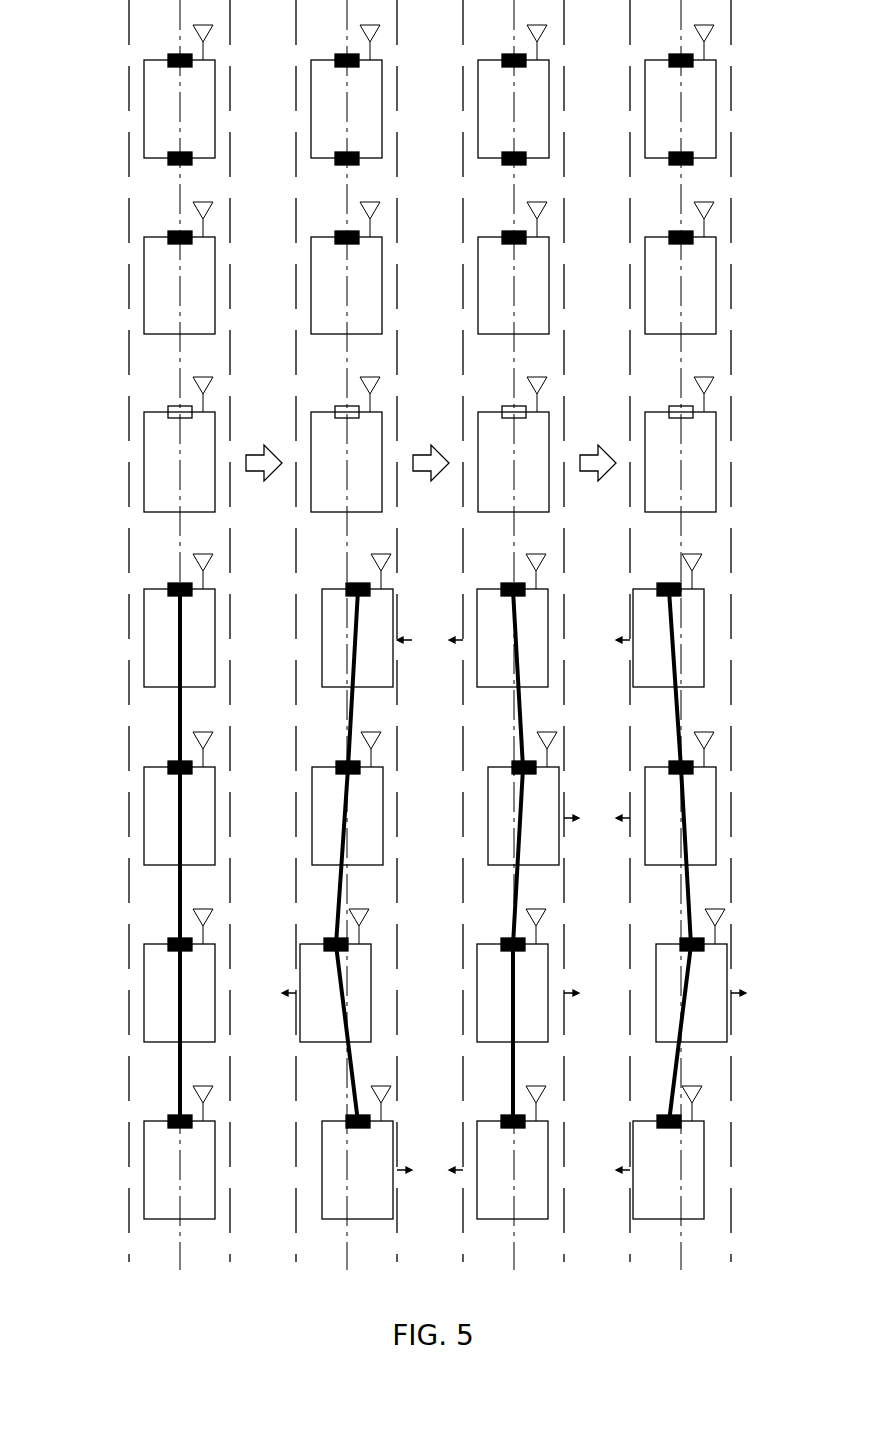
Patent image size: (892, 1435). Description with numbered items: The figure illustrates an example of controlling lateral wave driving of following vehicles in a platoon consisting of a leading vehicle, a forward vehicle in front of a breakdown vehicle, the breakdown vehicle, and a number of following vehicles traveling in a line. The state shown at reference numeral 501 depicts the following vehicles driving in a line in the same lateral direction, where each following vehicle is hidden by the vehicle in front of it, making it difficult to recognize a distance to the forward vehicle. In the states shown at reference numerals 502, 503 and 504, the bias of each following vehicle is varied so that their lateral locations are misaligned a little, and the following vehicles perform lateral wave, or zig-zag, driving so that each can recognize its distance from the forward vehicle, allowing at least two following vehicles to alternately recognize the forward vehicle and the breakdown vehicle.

The example of following vehicles driving in a line 501 is at (179, 651).
The example of lateral wave driving 502 is at (347, 651).
The example of lateral wave driving 503 is at (514, 651).
The example of lateral wave driving 504 is at (681, 651).